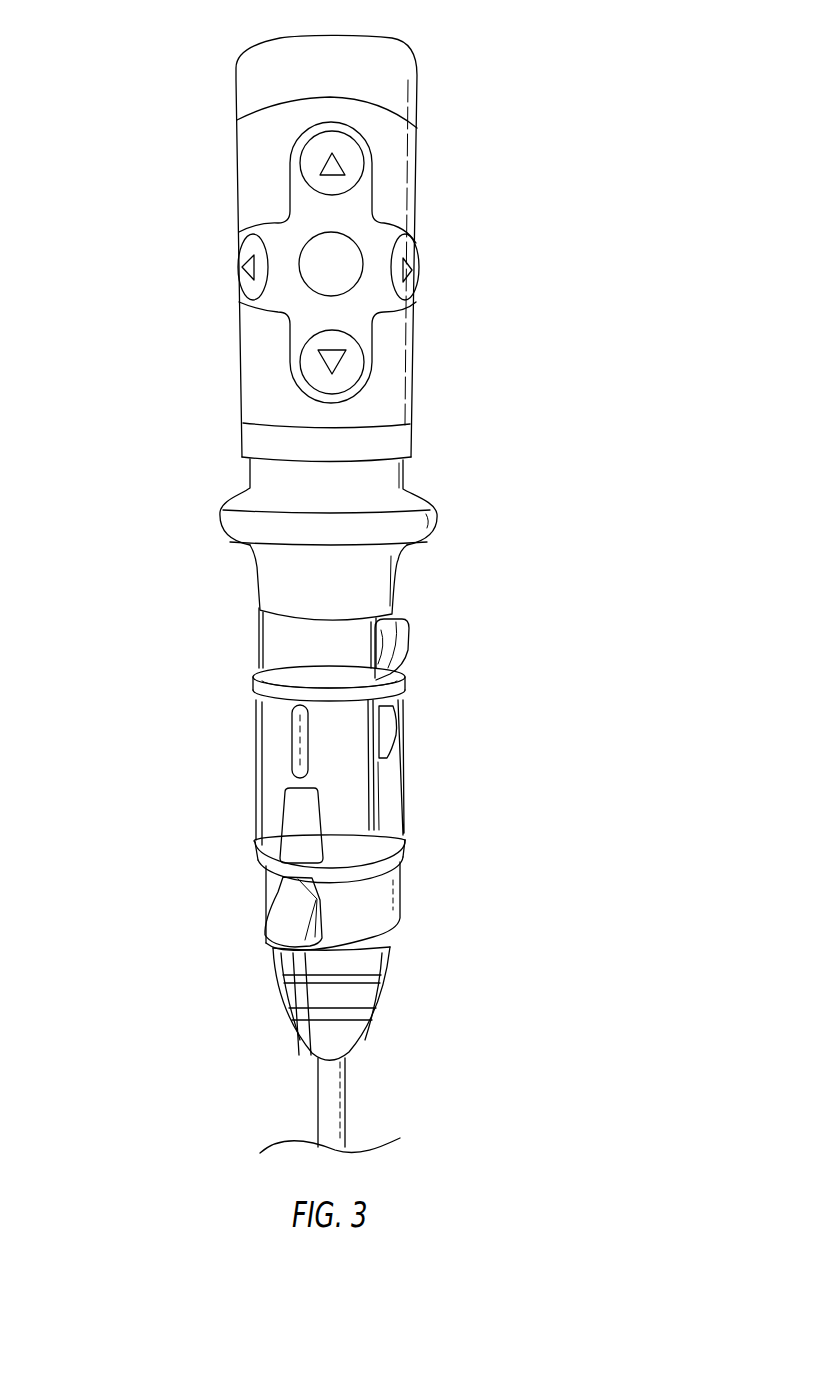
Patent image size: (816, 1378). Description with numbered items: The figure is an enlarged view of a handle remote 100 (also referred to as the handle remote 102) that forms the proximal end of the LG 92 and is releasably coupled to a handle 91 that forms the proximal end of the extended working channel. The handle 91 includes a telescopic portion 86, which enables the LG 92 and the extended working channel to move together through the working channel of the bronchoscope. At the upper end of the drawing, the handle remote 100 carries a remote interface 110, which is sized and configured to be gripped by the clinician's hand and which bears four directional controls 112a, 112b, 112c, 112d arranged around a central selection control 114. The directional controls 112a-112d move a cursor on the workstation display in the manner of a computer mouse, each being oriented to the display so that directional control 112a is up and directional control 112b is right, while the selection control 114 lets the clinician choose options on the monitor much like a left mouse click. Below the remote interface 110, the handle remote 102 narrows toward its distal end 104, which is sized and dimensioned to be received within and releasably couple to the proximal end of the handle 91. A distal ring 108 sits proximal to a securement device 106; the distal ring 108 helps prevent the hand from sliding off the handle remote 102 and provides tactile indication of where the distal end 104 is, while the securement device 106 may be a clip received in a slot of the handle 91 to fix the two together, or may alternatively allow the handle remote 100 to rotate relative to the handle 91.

The handle remote 100 is at (162, 275).
The handle remote 102 is at (392, 65).
The distal end 104 is at (272, 587).
The securement device 106 is at (400, 638).
The distal ring 108 is at (228, 522).
The remote interface 110 is at (417, 196).
The directional control 112a is at (348, 160).
The directional control 112b is at (410, 287).
The directional control 112c is at (343, 373).
The directional control 112d is at (240, 258).
The selection control 114 is at (348, 248).
The handle 91 is at (395, 822).
The LG 92 is at (388, 728).
The telescopic portion 86 is at (345, 1058).